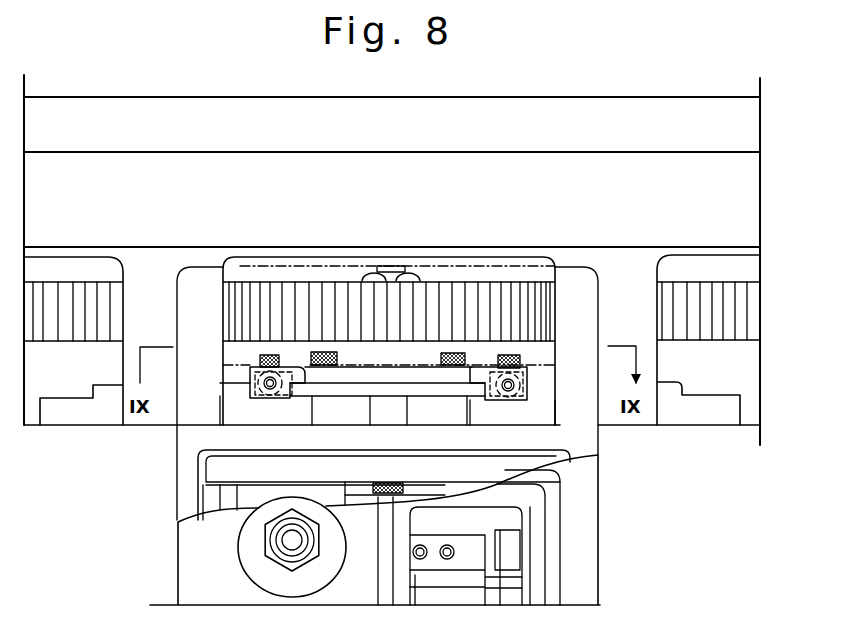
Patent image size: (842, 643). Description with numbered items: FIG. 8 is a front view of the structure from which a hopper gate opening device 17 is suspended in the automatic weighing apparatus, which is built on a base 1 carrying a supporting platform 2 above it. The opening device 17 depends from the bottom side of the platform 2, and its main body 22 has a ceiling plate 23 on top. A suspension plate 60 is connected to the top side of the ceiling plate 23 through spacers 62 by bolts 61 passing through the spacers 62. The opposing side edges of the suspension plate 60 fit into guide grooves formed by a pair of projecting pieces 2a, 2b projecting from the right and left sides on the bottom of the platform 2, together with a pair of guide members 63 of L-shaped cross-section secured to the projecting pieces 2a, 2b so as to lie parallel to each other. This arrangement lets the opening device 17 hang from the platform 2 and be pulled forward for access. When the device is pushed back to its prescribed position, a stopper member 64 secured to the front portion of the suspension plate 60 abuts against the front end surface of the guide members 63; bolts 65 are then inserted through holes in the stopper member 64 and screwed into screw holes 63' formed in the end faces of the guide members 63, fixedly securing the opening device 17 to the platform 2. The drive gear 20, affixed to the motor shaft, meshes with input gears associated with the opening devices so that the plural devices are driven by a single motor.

The base 1 is at (485, 288).
The supporting platform 2 is at (512, 160).
The projecting piece 2a is at (295, 412).
The projecting piece 2b is at (500, 416).
The hopper gate opening device 17 is at (640, 545).
The drive gear 20 is at (745, 300).
The hopper gate opening device main body 22 is at (216, 447).
The ceiling plate 23 is at (215, 465).
The suspension plate 60 is at (353, 388).
The bolt 61 is at (383, 496).
The spacer 62 is at (400, 438).
The guide member 63 is at (386, 345).
The screw hole 63' is at (389, 393).
The stopper member 64 is at (398, 375).
The bolt 65 is at (250, 375).